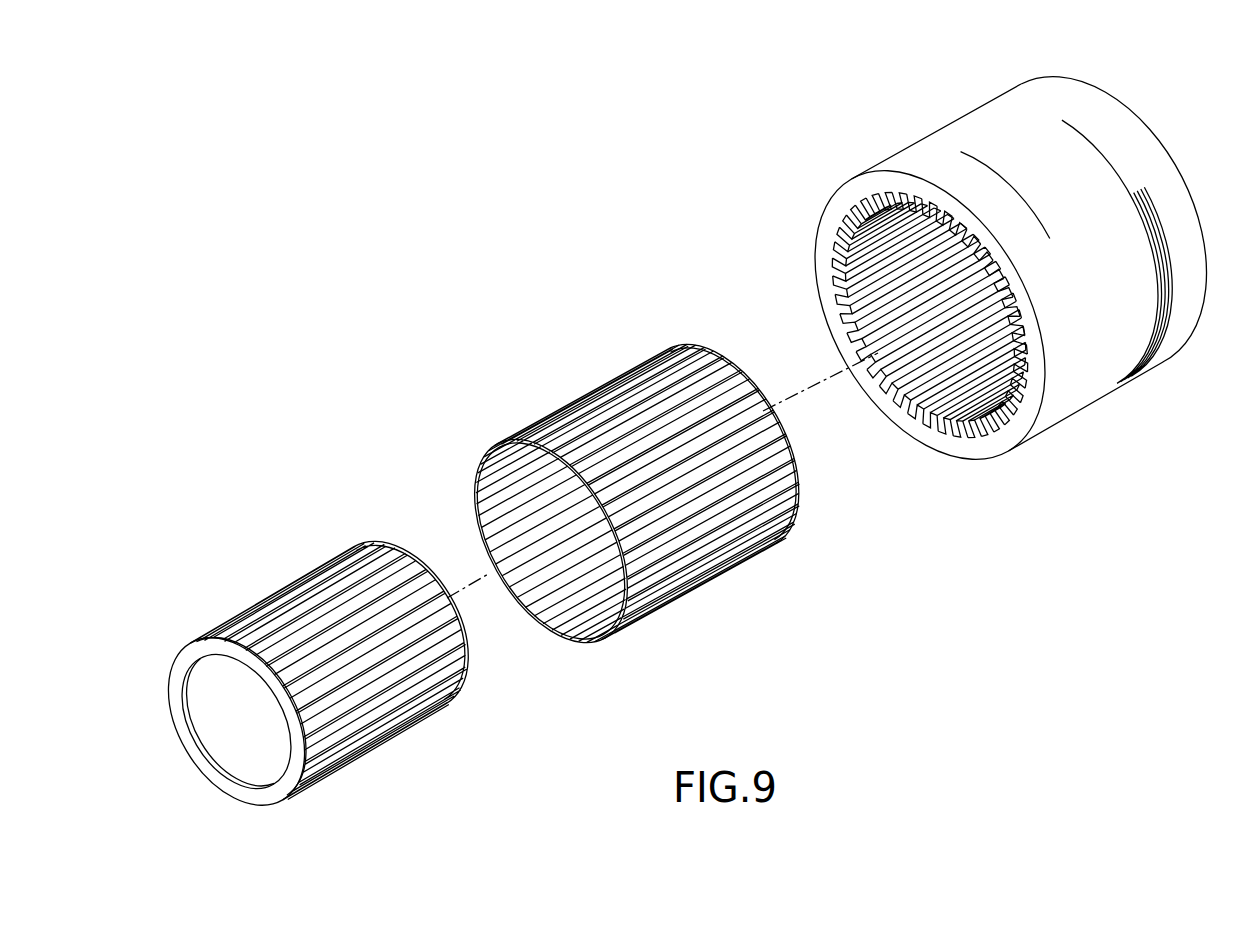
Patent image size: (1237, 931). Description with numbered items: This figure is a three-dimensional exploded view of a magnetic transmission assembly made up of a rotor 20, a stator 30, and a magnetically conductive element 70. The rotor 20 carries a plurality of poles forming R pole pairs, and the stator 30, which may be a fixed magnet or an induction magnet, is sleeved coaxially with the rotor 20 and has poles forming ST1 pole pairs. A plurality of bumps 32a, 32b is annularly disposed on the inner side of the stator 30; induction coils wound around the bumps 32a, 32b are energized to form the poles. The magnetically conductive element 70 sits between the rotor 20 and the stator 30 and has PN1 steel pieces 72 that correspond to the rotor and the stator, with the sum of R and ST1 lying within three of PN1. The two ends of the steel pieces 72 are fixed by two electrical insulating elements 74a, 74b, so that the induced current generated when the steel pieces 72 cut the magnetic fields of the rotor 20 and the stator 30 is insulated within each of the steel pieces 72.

The rotor 20 is at (188, 656).
The stator 30 is at (995, 268).
The bump 32a is at (845, 221).
The bump 32b is at (845, 270).
The magnetically conductive element 70 is at (630, 480).
The steel pieces 72 is at (685, 382).
The electrical insulating element 74a is at (476, 460).
The electrical insulating element 74b is at (720, 350).